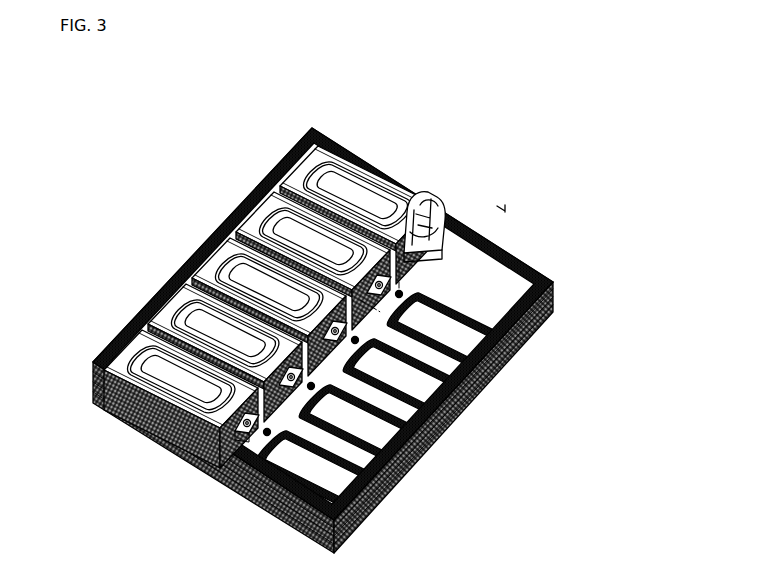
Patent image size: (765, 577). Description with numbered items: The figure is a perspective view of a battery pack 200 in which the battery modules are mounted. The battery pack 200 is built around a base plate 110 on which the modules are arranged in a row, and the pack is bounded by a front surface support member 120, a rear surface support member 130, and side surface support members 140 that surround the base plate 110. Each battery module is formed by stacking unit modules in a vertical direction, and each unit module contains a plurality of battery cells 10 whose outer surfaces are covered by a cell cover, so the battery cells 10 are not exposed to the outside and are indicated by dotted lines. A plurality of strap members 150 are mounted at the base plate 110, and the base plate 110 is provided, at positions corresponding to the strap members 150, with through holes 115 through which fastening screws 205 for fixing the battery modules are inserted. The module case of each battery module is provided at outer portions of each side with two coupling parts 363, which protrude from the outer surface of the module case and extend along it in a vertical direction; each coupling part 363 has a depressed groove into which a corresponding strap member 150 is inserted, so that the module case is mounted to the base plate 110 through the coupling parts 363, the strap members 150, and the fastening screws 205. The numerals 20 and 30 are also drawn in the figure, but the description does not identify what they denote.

The battery pack 200 is at (80, 95).
The battery cells 10 is at (220, 307).
The battery module 20 is at (238, 229).
The bracket 30 is at (364, 172).
The base plate 110 is at (240, 441).
The through holes 115 is at (265, 437).
The front surface support member 120 is at (146, 418).
The rear surface support member 130 is at (497, 239).
The side surface support members 140 is at (258, 171).
The strap members 150 is at (202, 277).
The fastening screws 205 is at (252, 421).
The coupling parts 363 is at (390, 284).